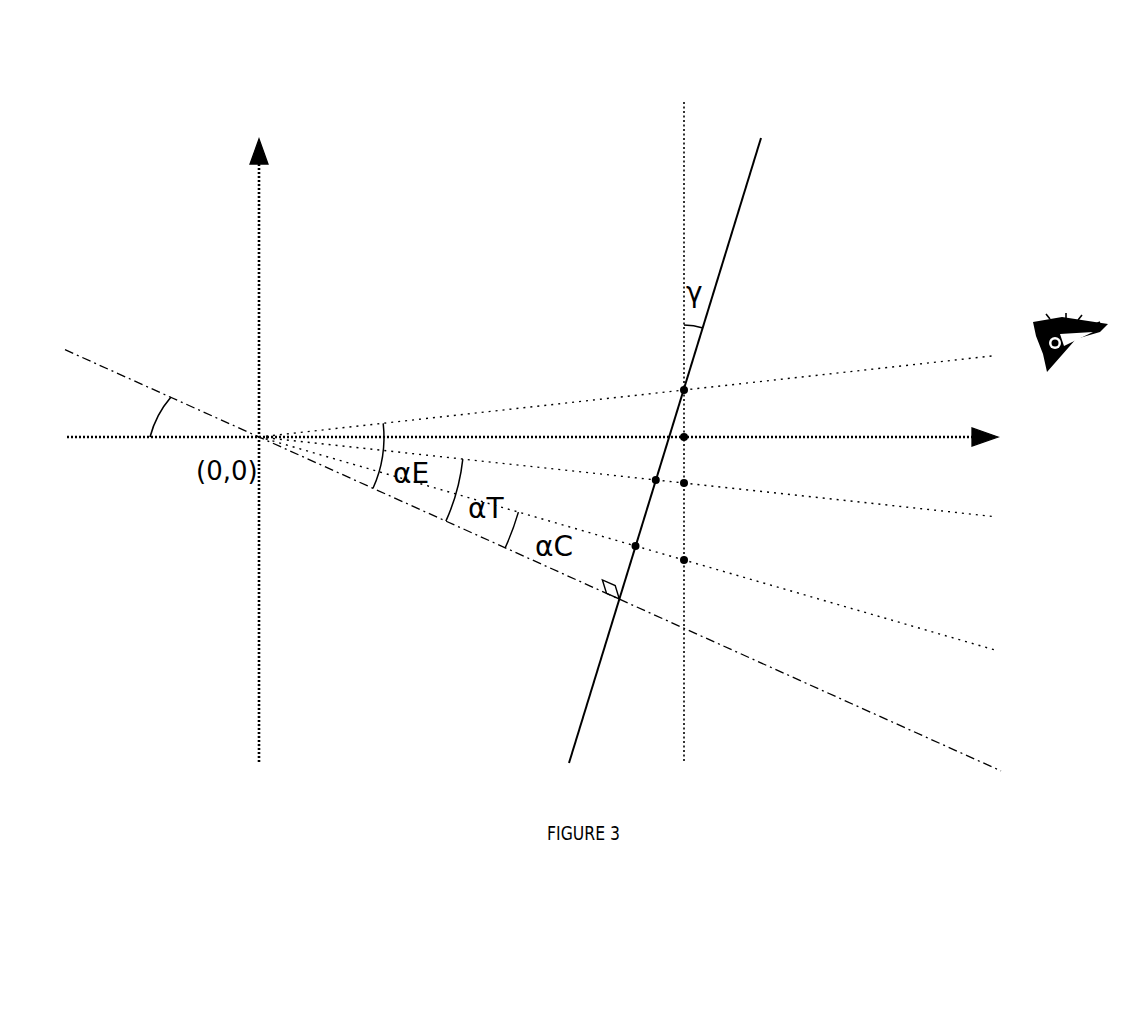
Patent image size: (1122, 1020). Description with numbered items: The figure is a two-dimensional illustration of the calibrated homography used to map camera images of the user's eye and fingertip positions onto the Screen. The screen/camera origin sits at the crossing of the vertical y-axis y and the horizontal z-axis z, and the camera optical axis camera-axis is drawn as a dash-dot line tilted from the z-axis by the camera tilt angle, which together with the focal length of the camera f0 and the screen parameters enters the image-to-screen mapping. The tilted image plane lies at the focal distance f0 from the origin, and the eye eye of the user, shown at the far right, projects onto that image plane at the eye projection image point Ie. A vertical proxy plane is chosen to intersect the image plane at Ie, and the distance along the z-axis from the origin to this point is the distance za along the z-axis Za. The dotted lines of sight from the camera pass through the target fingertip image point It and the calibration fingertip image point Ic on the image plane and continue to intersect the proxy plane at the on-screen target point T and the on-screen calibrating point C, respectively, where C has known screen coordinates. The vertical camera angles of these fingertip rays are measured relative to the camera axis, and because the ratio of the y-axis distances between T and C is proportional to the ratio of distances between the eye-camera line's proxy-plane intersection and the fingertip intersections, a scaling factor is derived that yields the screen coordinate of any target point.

The distance za along the z-axis Za is at (688, 432).
The focal length of the camera f0 is at (657, 450).
The eye projection image point Ie is at (627, 397).
The target fingertip image point It is at (641, 494).
The calibration fingertip image point Ic is at (621, 554).
The on-screen target point T is at (627, 477).
The on-screen calibrating point C is at (627, 543).
The y-axis y is at (277, 436).
The z-axis z is at (532, 419).
The camera tilt angle camera-axis is at (532, 547).
The element eye is at (1070, 342).